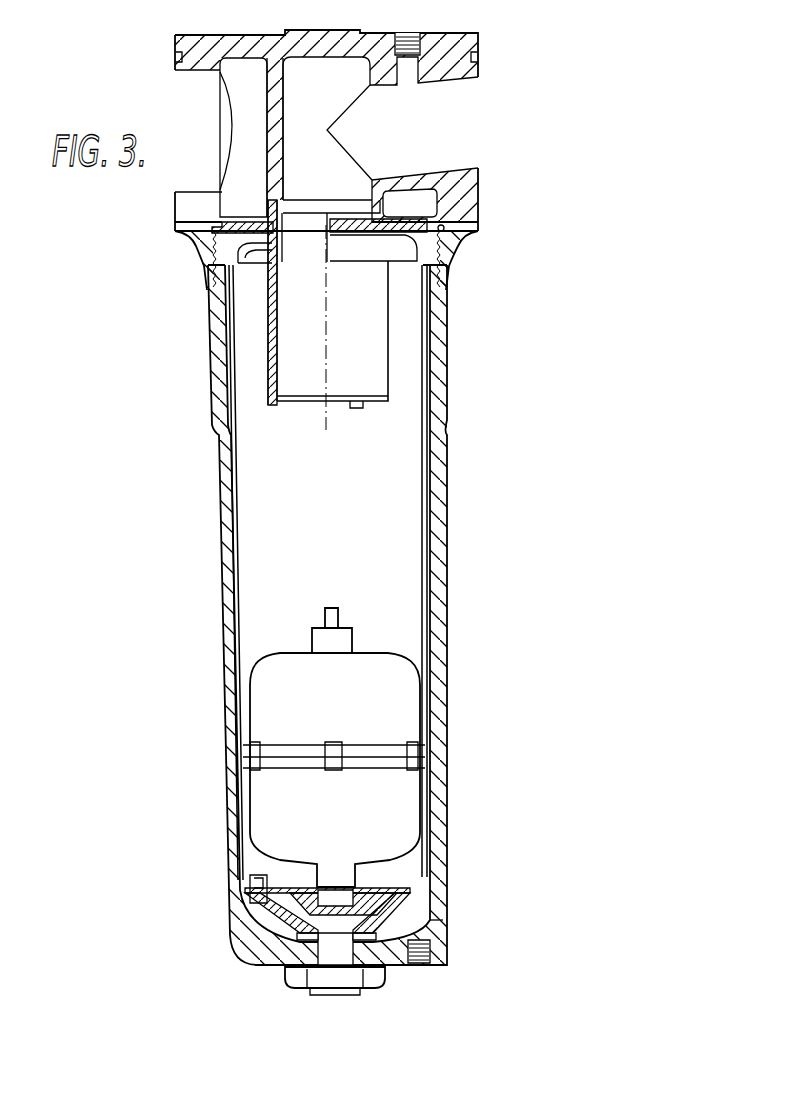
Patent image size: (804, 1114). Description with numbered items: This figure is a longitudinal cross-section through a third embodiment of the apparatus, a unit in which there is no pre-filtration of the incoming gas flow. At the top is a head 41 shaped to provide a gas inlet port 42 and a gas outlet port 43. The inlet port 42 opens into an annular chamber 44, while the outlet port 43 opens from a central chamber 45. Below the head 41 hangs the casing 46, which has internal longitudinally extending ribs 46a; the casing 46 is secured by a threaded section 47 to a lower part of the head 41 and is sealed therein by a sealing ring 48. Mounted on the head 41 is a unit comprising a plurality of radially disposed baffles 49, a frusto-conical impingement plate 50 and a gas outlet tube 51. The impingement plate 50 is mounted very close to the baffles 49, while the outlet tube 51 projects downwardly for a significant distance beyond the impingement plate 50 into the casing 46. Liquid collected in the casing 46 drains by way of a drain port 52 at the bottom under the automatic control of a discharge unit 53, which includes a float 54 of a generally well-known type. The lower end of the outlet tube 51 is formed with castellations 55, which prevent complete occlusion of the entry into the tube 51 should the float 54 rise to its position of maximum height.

The head 41 is at (460, 48).
The gas inlet port 42 is at (220, 72).
The gas outlet port 43 is at (455, 185).
The annular chamber 44 is at (415, 205).
The central chamber 45 is at (343, 97).
The casing 46 is at (446, 382).
The internal longitudinally extending ribs 46a is at (427, 518).
The threaded section 47 is at (207, 255).
The sealing ring 48 is at (207, 224).
The radially disposed baffles 49 is at (385, 233).
The frusto-conical impingement plate 50 is at (270, 265).
The gas outlet tube 51 is at (370, 354).
The drain port 52 is at (310, 949).
The discharge unit 53 is at (388, 881).
The float 54 is at (350, 818).
The castellations 55 is at (357, 410).